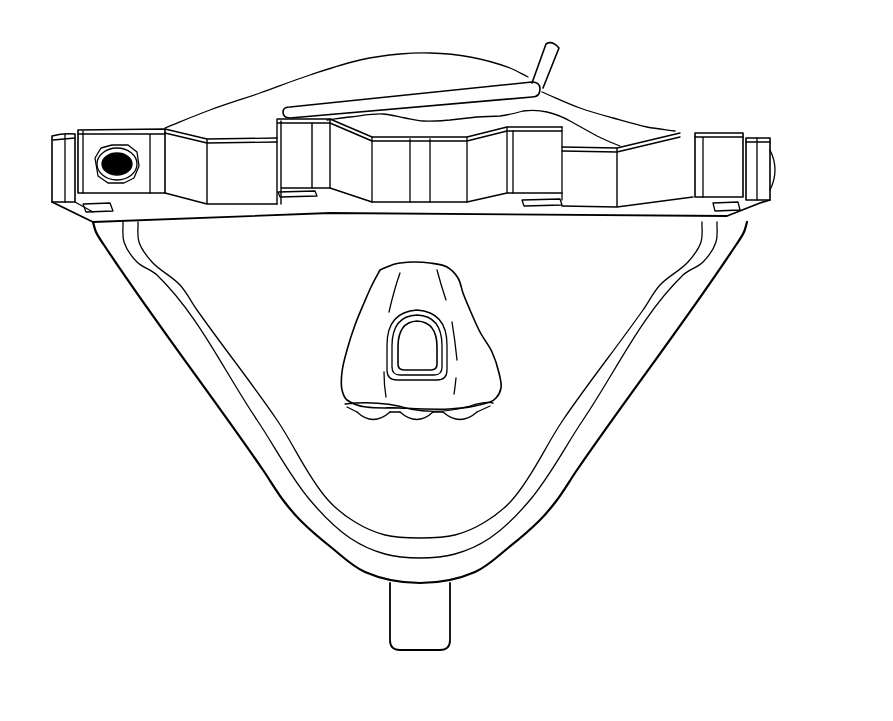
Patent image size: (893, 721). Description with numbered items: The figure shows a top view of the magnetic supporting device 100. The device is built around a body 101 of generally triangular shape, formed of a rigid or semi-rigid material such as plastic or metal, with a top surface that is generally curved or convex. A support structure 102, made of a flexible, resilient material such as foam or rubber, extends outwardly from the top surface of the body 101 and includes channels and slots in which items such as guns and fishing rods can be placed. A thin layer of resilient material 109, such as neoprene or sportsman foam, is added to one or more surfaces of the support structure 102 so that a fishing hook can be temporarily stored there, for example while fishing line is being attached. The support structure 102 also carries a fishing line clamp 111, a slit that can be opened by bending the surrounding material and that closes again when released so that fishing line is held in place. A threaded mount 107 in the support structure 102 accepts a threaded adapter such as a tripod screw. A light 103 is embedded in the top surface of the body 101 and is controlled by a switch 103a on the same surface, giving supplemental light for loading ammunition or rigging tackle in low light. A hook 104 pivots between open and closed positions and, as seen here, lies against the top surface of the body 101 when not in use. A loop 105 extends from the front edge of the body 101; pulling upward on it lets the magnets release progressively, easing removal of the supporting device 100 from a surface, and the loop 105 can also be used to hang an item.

The magnetic supporting device 100 is at (99, 45).
The body 101 is at (605, 420).
The support structure 102 is at (779, 169).
The light 103 is at (417, 330).
The switch 103a is at (353, 411).
The hook 104 is at (357, 98).
The loop 105 is at (450, 607).
The threaded mount 107 is at (115, 150).
The resilient material 109 is at (133, 125).
The fishing line clamp 111 is at (532, 206).